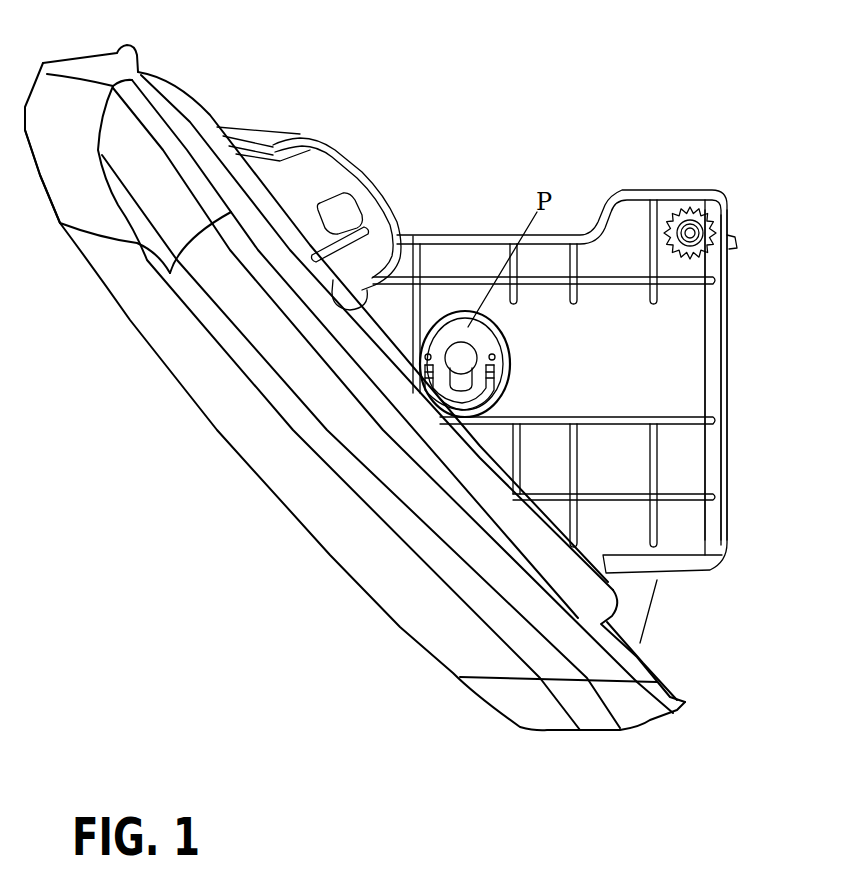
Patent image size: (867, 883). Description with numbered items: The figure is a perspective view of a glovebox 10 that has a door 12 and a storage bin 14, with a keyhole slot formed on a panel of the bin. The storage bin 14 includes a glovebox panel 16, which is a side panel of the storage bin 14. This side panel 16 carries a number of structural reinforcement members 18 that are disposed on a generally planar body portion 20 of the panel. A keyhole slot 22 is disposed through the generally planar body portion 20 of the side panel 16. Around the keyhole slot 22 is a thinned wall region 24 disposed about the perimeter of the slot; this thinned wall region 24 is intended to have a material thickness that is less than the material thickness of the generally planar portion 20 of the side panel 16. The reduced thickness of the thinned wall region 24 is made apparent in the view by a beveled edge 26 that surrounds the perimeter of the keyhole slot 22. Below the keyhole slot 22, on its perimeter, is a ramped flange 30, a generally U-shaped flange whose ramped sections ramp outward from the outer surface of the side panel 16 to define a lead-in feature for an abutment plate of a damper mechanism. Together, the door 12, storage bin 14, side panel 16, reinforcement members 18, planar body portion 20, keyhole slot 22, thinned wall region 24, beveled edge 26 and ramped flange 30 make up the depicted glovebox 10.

The glovebox 10 is at (526, 100).
The door 12 is at (152, 323).
The storage bin 14 is at (618, 178).
The glovebox panel 16 is at (677, 337).
The structural reinforcement members 18 is at (670, 427).
The generally planar body portion 20 is at (598, 373).
The keyhole slot 22 is at (440, 393).
The thinned wall region 24 is at (447, 337).
The beveled edge 26 is at (462, 310).
The ramped flange 30 is at (452, 403).